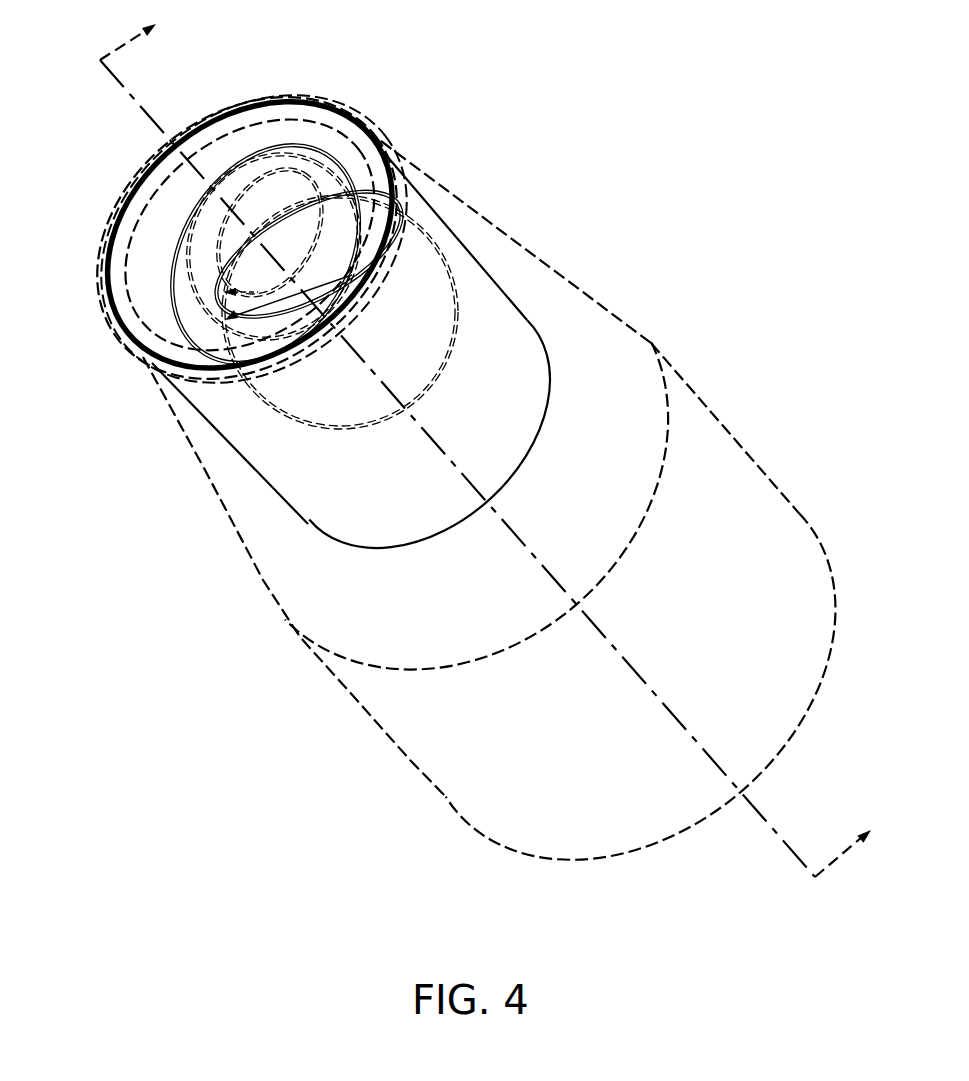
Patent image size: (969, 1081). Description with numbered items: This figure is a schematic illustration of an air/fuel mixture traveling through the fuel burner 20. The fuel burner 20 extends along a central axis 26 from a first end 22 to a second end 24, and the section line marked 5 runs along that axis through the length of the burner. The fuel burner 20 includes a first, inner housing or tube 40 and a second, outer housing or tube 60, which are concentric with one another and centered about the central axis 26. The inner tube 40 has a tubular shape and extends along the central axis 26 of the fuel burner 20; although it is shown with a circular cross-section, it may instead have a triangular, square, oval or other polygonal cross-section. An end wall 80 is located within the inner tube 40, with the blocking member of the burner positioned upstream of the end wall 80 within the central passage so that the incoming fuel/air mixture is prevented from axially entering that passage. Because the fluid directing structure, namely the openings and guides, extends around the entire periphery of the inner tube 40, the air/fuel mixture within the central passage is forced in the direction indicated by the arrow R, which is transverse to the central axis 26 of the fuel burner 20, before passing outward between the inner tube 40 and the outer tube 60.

The section line 5- 5 is at (497, 442).
The fuel burner 20 is at (640, 258).
The first end 22 is at (832, 502).
The second end 24 is at (424, 110).
The central axis 26 is at (778, 830).
The inner tube 40 is at (109, 329).
The outer tube 60 is at (398, 774).
The end wall 80 is at (532, 384).
The arrow R is at (278, 302).